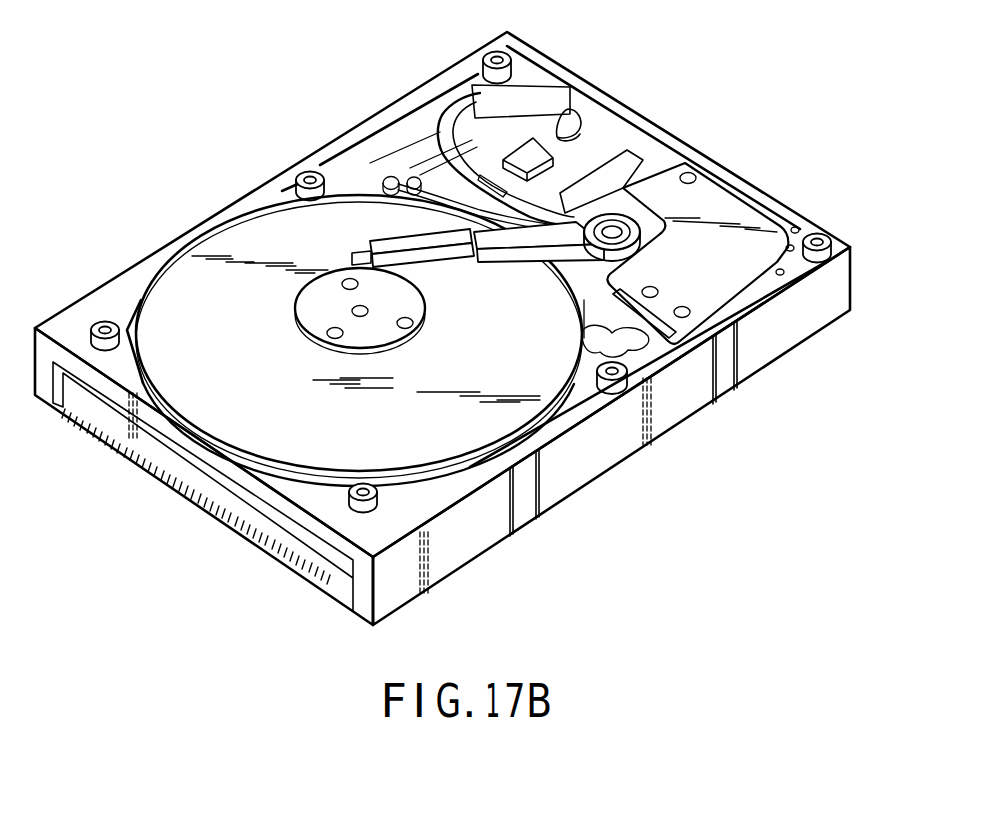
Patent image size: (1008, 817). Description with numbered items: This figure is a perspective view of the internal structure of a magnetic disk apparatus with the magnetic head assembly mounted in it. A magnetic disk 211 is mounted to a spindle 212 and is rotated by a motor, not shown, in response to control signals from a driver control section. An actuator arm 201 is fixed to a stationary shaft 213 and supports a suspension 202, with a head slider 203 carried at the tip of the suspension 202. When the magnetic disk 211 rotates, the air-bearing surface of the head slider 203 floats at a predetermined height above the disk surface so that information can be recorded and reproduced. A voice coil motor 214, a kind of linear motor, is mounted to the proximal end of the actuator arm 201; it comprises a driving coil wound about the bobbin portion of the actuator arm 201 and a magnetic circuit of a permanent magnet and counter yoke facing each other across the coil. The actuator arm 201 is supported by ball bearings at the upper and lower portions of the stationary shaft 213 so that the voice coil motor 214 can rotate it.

The actuator arm 201 is at (500, 250).
The suspension 202 is at (443, 273).
The head slider 203 is at (364, 256).
The magnetic disk 211 is at (222, 270).
The spindle 212 is at (310, 323).
The stationary shaft 213 is at (610, 232).
The voice coil motor 214 is at (738, 222).